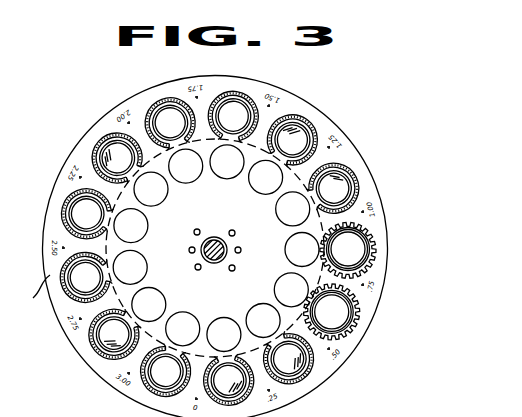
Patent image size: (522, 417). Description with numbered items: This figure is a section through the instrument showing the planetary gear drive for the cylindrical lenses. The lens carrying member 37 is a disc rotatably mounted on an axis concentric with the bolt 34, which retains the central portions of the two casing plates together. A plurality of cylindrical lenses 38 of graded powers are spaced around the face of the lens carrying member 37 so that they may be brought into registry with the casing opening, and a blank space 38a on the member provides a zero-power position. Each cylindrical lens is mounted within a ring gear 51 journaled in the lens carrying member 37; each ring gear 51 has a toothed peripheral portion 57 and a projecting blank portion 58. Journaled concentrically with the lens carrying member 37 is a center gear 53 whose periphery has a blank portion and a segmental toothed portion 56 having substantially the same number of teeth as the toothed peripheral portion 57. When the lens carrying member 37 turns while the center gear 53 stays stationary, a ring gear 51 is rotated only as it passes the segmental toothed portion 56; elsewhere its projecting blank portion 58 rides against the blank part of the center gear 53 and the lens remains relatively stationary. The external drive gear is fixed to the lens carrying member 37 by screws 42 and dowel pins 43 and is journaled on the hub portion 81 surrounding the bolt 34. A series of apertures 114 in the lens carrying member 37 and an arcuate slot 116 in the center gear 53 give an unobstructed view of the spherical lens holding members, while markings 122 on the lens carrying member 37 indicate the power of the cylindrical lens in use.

The lens carrying member 37 is at (110, 120).
The cylindrical lens 38 is at (113, 157).
The blank space 38a is at (345, 246).
The ring gear 51 is at (353, 167).
The center gear 53 is at (125, 198).
The segmental toothed portion 56 is at (307, 280).
The toothed peripheral portion 57 is at (368, 223).
The projecting blank portion 58 is at (380, 258).
The hub portion 81 is at (214, 238).
The bolt 34 is at (214, 259).
The screw 42 is at (233, 271).
The dowel pin 43 is at (240, 252).
The aperture 114 is at (167, 193).
The arcuate slot 116 is at (199, 268).
The markings 122 is at (66, 316).